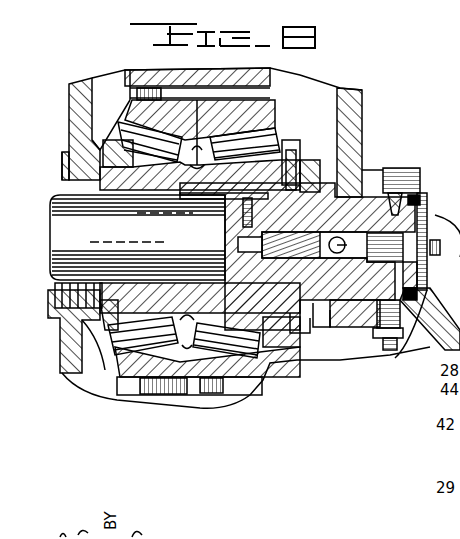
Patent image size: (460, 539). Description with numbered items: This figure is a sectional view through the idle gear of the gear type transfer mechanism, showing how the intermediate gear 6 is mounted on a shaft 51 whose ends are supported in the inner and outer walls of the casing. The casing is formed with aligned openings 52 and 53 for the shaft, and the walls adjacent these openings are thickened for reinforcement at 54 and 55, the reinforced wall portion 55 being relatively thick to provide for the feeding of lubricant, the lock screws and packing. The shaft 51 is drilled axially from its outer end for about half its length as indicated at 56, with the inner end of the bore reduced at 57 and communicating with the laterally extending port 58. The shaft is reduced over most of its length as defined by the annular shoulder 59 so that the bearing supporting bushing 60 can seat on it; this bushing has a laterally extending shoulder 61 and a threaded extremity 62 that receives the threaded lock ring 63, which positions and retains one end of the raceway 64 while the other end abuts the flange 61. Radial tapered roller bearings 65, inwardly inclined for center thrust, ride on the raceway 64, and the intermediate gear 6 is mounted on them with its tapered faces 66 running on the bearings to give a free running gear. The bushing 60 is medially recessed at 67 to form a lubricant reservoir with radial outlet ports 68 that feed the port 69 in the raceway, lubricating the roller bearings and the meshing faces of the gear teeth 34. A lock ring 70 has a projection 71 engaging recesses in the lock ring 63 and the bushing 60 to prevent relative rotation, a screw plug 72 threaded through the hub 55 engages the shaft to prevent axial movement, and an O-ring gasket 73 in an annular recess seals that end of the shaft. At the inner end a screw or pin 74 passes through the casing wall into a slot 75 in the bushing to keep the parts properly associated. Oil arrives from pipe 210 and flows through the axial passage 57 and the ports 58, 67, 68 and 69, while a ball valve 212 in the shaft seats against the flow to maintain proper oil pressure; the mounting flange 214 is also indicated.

The intermediate gear 6 is at (250, 387).
The gear teeth 34 is at (262, 98).
The shaft 51 is at (108, 231).
The opening 52 is at (72, 150).
The opening 53 is at (373, 170).
The reinforcement 54 is at (82, 143).
The reinforced wall portion 55 is at (382, 168).
The axial bore 56 is at (342, 260).
The reduced bore end 57 is at (230, 237).
The laterally extending port 58 is at (228, 218).
The annular shoulder 59 is at (328, 188).
The bushing 60 is at (107, 193).
The annular shoulder 61 is at (55, 197).
The threaded extremity 62 is at (297, 256).
The lock ring 63 is at (313, 160).
The raceway 64 is at (288, 160).
The radial tapered roller bearings 65 is at (213, 377).
The tapered faces 66 is at (130, 114).
The recess 67 is at (147, 190).
The radial outlet ports 68 is at (182, 192).
The port 69 is at (188, 322).
The lock ring 70 is at (292, 336).
The projection 71 is at (300, 157).
The screw plug 72 is at (400, 172).
The O-ring gasket 73 is at (422, 197).
The screw or pin 74 is at (83, 331).
The slot 75 is at (95, 300).
The pipe 210 is at (394, 352).
The ball valve 212 is at (384, 332).
The mounting flange 214 is at (430, 271).